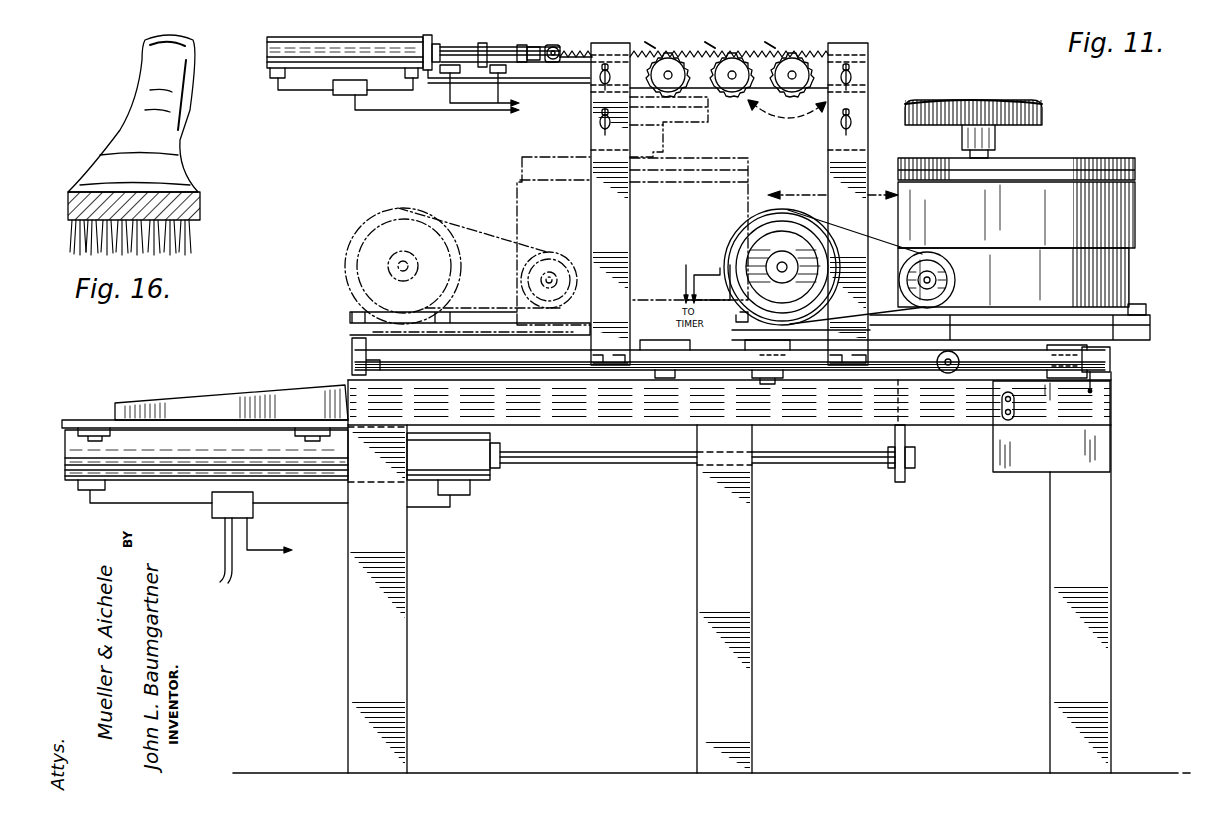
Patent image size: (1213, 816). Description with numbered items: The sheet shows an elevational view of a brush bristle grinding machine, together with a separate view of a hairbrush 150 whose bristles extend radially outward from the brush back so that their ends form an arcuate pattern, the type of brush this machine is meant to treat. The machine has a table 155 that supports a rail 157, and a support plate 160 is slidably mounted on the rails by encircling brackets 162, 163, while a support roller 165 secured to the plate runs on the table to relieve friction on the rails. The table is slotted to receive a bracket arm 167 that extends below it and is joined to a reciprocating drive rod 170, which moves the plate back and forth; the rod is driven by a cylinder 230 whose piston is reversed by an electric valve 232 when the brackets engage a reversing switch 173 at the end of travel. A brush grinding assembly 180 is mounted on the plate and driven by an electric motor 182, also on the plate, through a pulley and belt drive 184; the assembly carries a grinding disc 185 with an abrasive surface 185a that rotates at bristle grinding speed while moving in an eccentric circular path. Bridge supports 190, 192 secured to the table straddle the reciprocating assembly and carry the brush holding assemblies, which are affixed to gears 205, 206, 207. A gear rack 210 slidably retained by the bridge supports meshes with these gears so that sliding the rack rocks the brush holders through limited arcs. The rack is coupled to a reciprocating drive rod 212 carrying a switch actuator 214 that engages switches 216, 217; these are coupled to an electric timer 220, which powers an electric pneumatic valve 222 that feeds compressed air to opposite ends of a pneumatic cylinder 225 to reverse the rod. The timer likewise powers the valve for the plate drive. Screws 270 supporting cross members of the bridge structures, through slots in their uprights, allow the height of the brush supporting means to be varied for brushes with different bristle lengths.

In FIG. 16, the hairbrush 150 is at (105, 165).
In FIG. 11, the table 155 is at (582, 374).
In FIG. 11, the rail 157 is at (680, 372).
In FIG. 11, the support plate 160 is at (1140, 340).
In FIG. 11, the encircling bracket 162 is at (775, 368).
In FIG. 11, the encircling bracket 163 is at (1058, 355).
In FIG. 11, the support roller 165 is at (948, 374).
In FIG. 11, the bracket arm 167 is at (905, 441).
In FIG. 11, the reciprocating drive rod 170 is at (815, 464).
In FIG. 11, the reversing switch 173 is at (355, 362).
In FIG. 11, the brush grinding assembly 180 is at (518, 200).
In FIG. 11, the electric motor 182 is at (362, 230).
In FIG. 11, the pulley and belt drive 184 is at (898, 240).
In FIG. 11, the grinding disc 185 is at (683, 124).
In FIG. 11, the abrasive surface 185a is at (972, 98).
In FIG. 11, the bridge support 190 is at (588, 212).
In FIG. 11, the bridge support 192 is at (828, 160).
In FIG. 11, the gear 205 is at (660, 55).
In FIG. 11, the gear 206 is at (742, 58).
In FIG. 11, the gear 207 is at (802, 58).
In FIG. 11, the gear rack 210 is at (682, 52).
In FIG. 11, the reciprocating drive rod 212 is at (522, 47).
In FIG. 11, the switch actuator 214 is at (480, 43).
In FIG. 11, the switch 216 is at (554, 47).
In FIG. 11, the switch 217 is at (446, 74).
In FIG. 11, the electric timer 220 is at (1078, 456).
In FIG. 11, the electric pneumatic valve 222 is at (333, 92).
In FIG. 11, the pneumatic cylinder 225 is at (320, 38).
In FIG. 11, the cylinder 230 is at (482, 484).
In FIG. 11, the electric valve 232 is at (218, 520).
In FIG. 11, the screw 270 is at (600, 120).